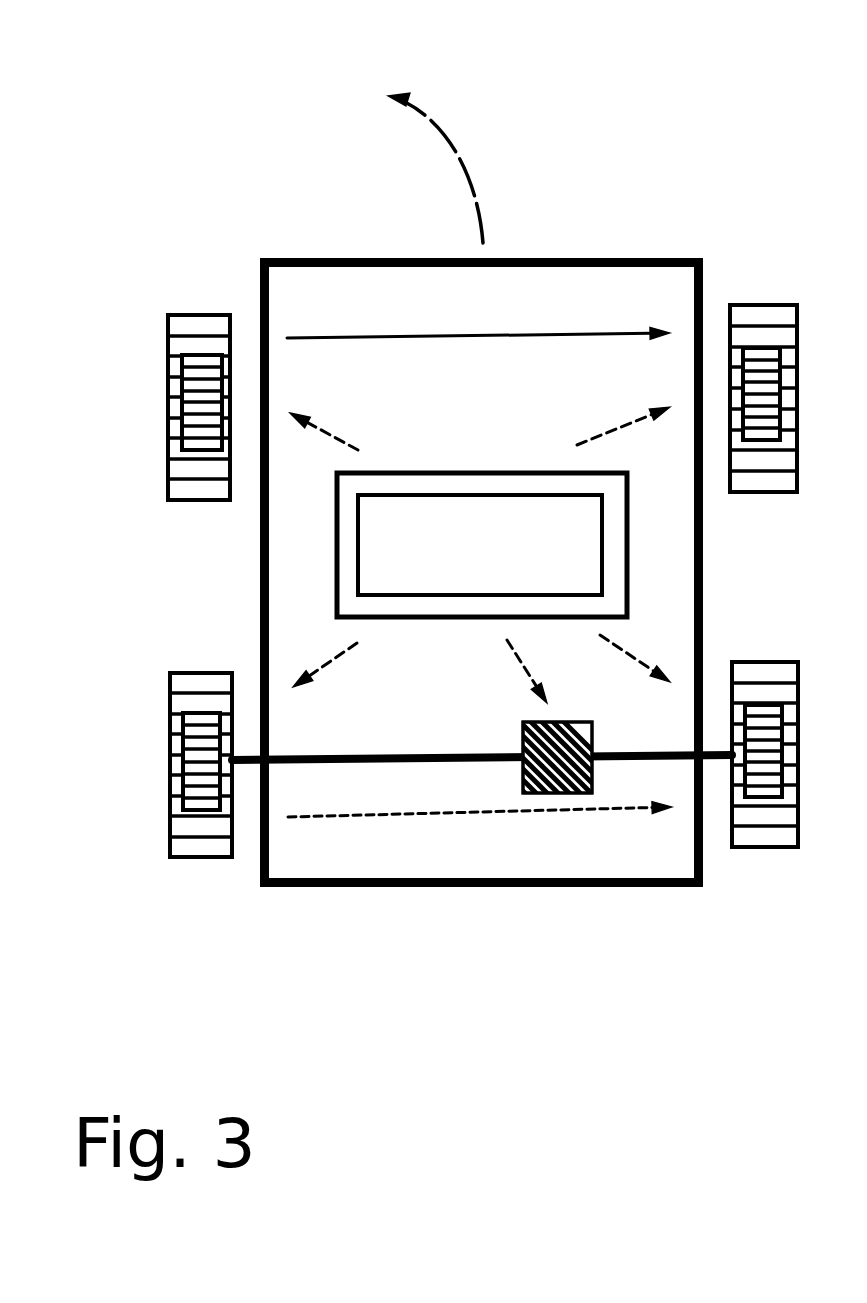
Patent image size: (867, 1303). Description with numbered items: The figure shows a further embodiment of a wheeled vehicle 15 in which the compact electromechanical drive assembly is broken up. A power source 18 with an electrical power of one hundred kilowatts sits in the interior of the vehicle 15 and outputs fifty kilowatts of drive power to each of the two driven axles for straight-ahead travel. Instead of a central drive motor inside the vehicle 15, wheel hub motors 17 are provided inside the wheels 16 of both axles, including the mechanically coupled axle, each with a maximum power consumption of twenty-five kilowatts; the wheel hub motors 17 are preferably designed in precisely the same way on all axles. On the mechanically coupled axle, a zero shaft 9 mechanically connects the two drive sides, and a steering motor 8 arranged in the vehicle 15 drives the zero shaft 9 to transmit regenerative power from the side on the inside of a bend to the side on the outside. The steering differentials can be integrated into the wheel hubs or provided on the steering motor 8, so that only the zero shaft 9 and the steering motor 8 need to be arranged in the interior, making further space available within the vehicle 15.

The steering motor 8 is at (572, 813).
The zero shaft 9 is at (338, 777).
The wheeled vehicle 15 is at (628, 248).
The wheels 16 is at (180, 313).
The wheel hub motors 17 is at (183, 397).
The power source 18 is at (337, 567).